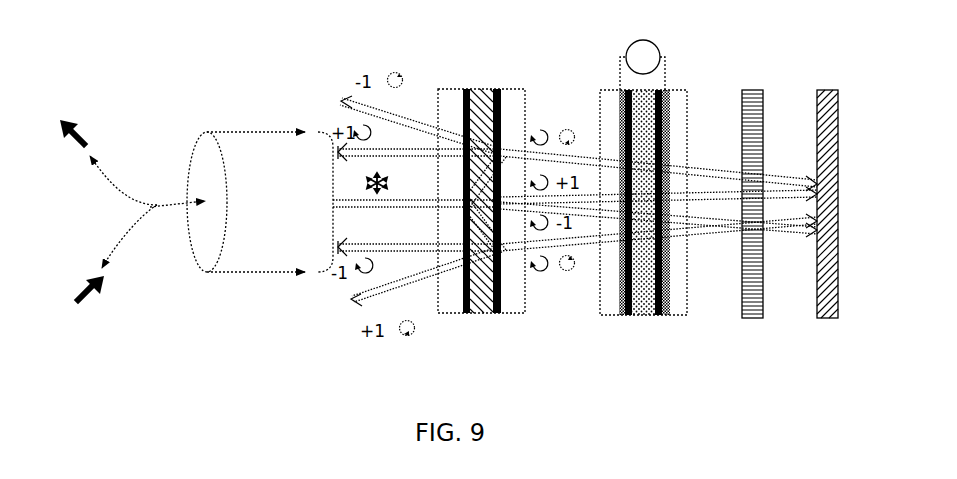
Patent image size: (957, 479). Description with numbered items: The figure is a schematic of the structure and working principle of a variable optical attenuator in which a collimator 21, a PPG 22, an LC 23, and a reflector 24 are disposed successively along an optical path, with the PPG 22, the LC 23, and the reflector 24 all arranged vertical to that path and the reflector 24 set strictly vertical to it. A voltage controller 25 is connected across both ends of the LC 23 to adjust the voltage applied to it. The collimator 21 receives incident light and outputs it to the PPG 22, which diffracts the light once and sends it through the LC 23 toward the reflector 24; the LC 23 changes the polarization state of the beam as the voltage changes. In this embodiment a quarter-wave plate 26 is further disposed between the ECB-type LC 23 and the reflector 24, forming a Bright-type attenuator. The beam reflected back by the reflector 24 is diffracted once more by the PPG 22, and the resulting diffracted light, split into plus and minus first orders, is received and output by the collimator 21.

The collimator 21 is at (283, 273).
The PPG 22 is at (490, 318).
The LC 23 is at (653, 318).
The reflector 24 is at (827, 318).
The voltage controller 25 is at (660, 56).
The quarter-wave plate 26 is at (752, 318).